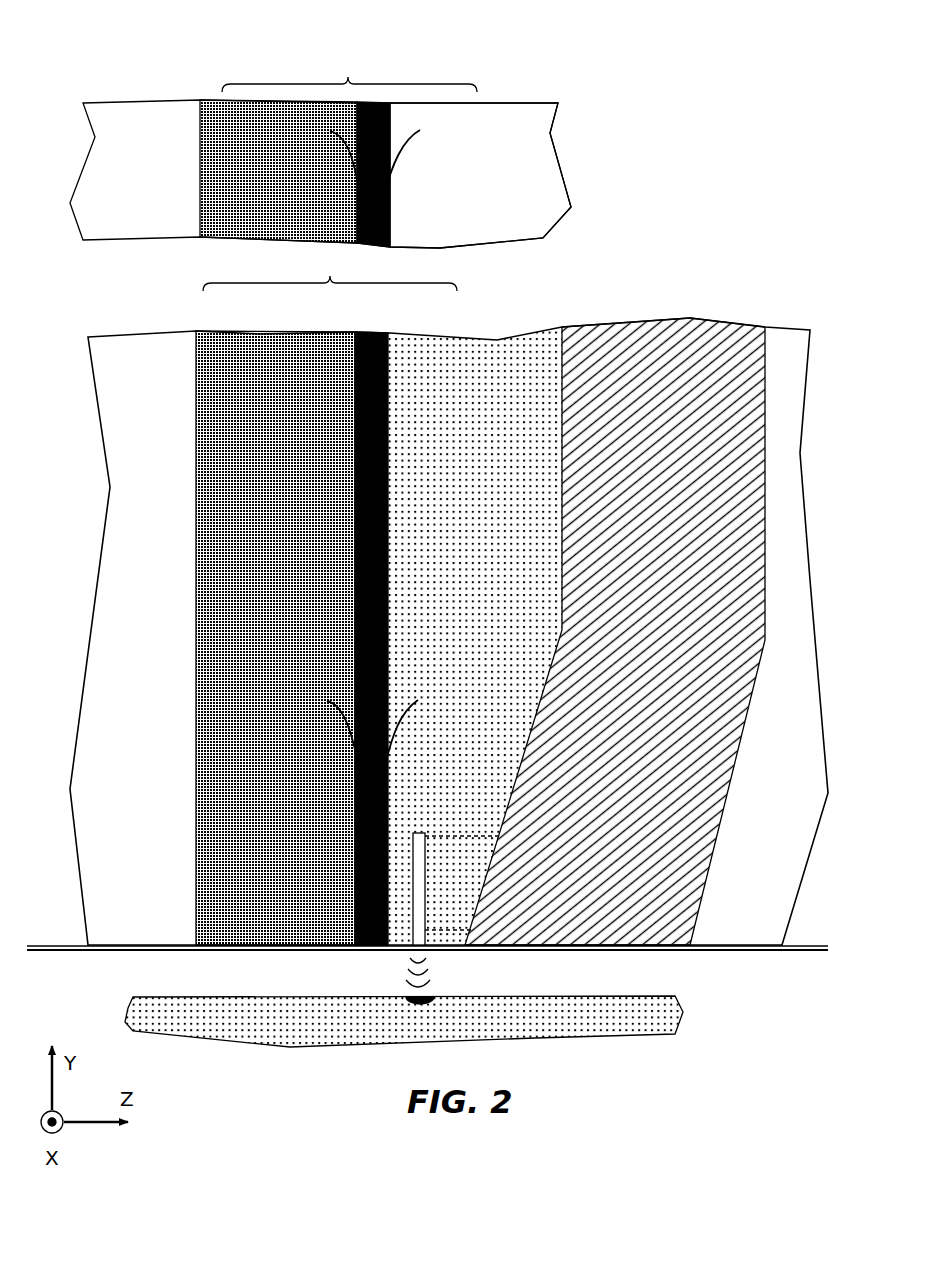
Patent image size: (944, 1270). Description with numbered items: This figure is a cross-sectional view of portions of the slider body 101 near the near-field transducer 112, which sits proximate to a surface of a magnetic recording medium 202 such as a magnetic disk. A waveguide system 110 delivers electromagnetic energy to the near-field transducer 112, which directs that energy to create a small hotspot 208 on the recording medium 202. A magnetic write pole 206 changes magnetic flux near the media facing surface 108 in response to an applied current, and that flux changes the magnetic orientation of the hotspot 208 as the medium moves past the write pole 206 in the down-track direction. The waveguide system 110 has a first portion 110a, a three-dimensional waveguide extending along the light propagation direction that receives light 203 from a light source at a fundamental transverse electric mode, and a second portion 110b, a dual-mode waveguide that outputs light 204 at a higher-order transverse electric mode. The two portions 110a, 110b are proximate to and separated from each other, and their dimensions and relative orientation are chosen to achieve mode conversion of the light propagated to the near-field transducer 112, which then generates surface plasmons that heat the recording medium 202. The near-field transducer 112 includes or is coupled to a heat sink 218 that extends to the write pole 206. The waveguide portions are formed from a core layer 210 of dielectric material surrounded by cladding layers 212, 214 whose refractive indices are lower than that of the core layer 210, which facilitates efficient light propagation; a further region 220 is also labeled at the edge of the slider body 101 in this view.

The slider body 101 is at (780, 90).
The waveguide system 110 is at (340, 164).
The first portion of the waveguide system 110a is at (616, 92).
The second portion of the waveguide system 110b is at (159, 342).
The light 203 is at (331, 133).
The light 204 is at (343, 712).
The cladding layer 214 is at (235, 234).
The core layer 210 is at (377, 247).
The cladding layer 212 is at (505, 240).
The magnetic write pole 206 is at (682, 318).
The leading edge region 220 is at (138, 918).
The near-field transducer 112 is at (417, 928).
The heat sink 218 is at (455, 912).
The media facing surface 108 is at (728, 952).
The magnetic recording medium 202 is at (187, 1020).
The hotspot 208 is at (420, 1003).